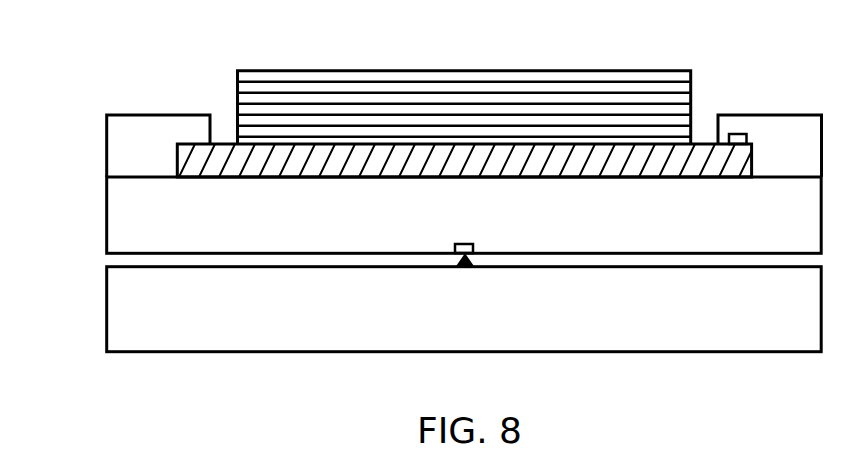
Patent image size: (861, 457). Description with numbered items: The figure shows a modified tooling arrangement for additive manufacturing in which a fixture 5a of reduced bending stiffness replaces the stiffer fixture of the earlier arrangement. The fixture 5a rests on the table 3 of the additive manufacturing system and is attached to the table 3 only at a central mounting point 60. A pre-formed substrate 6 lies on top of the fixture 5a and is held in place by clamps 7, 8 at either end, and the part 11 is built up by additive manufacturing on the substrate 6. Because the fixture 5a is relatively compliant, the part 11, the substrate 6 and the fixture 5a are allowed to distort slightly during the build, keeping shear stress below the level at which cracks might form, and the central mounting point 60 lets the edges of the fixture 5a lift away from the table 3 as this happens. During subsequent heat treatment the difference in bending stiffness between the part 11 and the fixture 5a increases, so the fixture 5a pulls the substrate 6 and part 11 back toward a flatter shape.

The table 3 is at (120, 322).
The fixture 5a is at (125, 228).
The substrate 6 is at (228, 141).
The clamp 7 is at (127, 122).
The clamp 8 is at (782, 115).
The part 11 is at (358, 70).
The central mounting point 60 is at (465, 266).